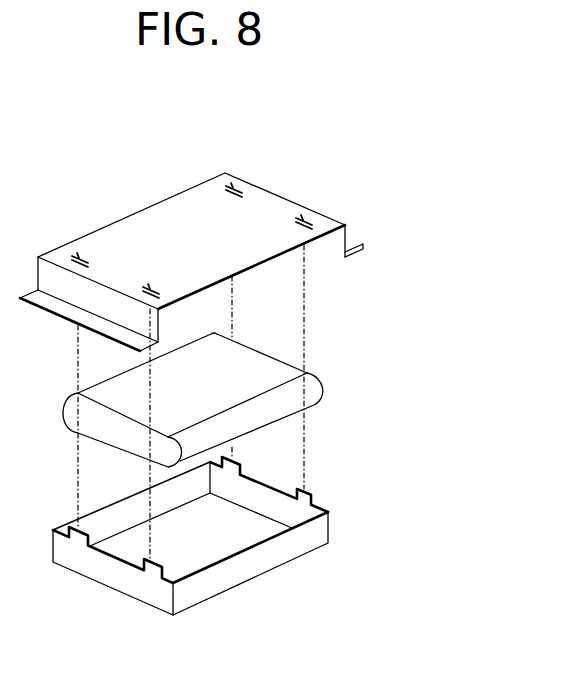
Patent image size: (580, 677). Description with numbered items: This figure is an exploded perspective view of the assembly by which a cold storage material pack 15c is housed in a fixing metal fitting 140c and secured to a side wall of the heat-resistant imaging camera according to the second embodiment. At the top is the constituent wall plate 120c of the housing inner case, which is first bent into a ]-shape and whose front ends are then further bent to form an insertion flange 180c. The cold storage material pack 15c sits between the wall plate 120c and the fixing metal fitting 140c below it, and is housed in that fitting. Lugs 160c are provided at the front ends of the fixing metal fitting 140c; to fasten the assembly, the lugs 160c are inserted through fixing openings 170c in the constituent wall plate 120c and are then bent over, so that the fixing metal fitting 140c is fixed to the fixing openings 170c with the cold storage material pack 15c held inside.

The constituent wall plate 120c is at (214, 257).
The fixing opening 170c is at (204, 222).
The insertion flange 180c is at (399, 232).
The cold storage material pack 15c is at (277, 400).
The fixing metal fitting 140c is at (263, 538).
The lug 160c is at (242, 516).